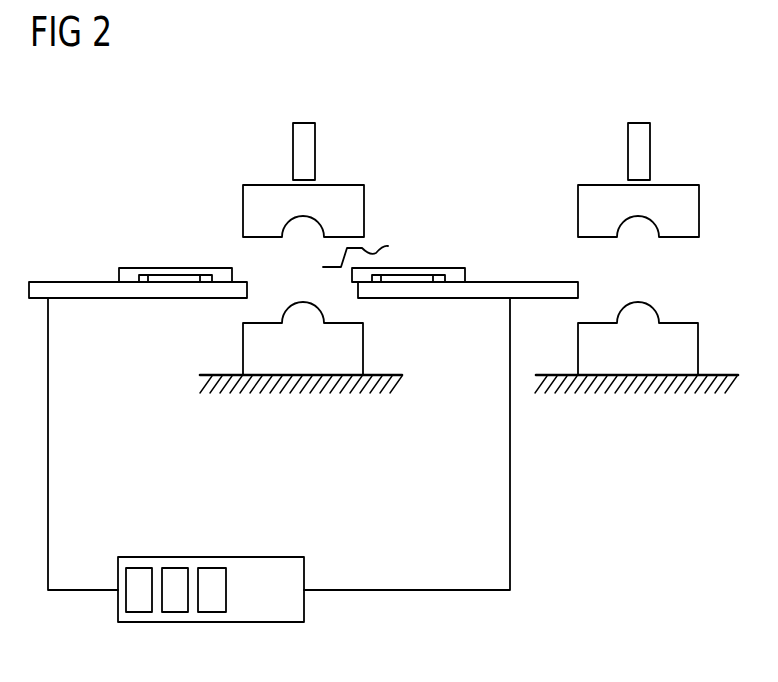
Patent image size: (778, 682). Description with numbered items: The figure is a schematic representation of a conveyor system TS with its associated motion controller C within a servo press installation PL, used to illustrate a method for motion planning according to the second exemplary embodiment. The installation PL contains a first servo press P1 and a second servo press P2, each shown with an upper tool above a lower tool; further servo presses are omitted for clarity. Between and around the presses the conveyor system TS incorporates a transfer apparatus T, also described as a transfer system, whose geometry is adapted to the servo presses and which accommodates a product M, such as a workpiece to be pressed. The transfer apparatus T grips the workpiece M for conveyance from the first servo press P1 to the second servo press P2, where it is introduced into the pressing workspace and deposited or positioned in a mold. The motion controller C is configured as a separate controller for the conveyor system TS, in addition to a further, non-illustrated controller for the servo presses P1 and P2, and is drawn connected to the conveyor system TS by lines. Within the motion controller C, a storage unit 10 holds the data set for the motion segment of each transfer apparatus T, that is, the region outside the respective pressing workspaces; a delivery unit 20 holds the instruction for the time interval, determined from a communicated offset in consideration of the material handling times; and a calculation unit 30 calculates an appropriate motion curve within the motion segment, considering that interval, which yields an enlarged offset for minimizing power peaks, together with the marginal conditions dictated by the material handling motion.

The servo press installation PL is at (541, 80).
The first servo press P1 is at (350, 168).
The second servo press P2 is at (684, 167).
The product M is at (373, 252).
The transfer apparatus T is at (532, 282).
The conveyor system TS is at (125, 298).
The motion controller C is at (307, 603).
The storage unit 10 is at (138, 568).
The delivery unit 20 is at (175, 568).
The calculation unit 30 is at (212, 568).